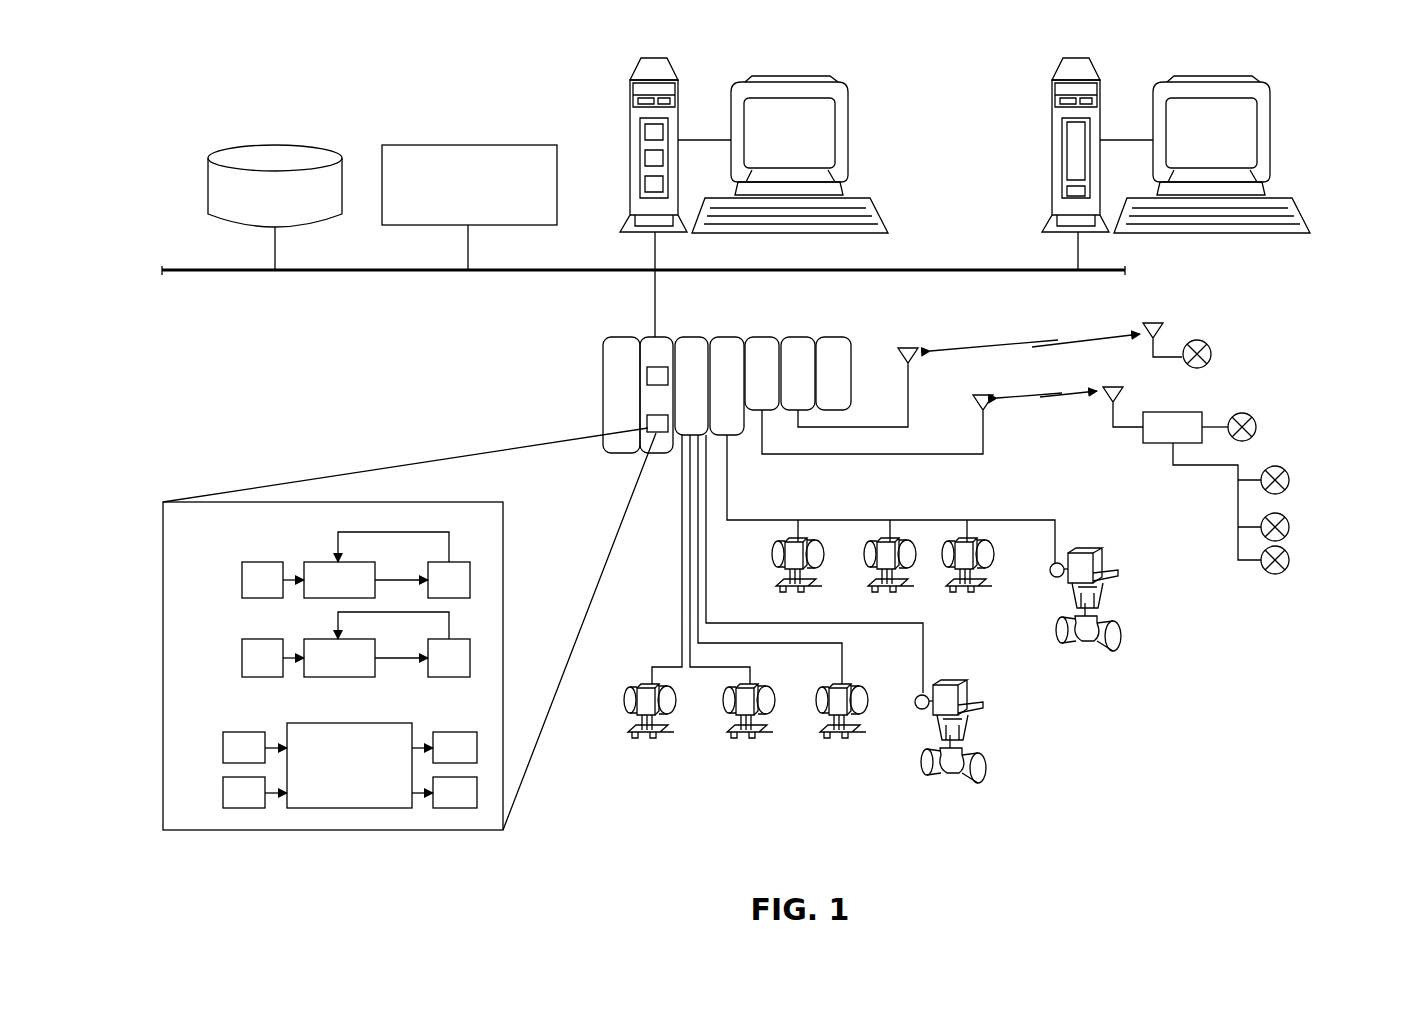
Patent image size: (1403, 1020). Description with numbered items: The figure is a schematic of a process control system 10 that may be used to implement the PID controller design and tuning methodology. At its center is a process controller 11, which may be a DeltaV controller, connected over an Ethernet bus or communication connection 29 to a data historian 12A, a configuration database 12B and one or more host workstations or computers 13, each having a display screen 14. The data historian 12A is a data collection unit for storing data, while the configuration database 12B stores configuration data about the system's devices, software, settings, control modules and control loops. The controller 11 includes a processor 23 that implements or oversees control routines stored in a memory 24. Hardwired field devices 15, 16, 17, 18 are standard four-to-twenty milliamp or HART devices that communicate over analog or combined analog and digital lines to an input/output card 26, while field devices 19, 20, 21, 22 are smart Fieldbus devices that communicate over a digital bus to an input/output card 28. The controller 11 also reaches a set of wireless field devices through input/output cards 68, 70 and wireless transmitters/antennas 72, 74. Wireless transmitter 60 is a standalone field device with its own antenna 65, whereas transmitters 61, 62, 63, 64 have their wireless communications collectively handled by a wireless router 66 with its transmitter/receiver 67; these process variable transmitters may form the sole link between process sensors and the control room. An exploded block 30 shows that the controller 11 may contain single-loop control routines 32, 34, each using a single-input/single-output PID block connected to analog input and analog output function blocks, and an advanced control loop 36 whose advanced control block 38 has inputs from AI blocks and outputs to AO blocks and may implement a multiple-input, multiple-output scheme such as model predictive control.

The process control system 10 is at (959, 60).
The process controller 11 is at (648, 343).
The data historian 12A is at (305, 142).
The configuration database 12B is at (501, 144).
The host workstation 13 is at (630, 98).
The display screen 14 is at (848, 123).
The field device 15 is at (643, 730).
The field device 16 is at (743, 730).
The field device 17 is at (836, 730).
The field device 18 is at (943, 717).
The field device 19 is at (805, 540).
The field device 20 is at (890, 540).
The field device 21 is at (967, 540).
The field device 22 is at (1078, 552).
The processor 23 is at (647, 375).
The memory 24 is at (648, 425).
The input/output card 26 is at (693, 350).
The input/output card 28 is at (722, 347).
The communication connection 29 is at (643, 294).
The exploded block 30 is at (409, 629).
The single-loop control routine 32 is at (238, 551).
The single-loop control routine 34 is at (238, 629).
The advanced control loop 36 is at (331, 742).
The advanced control block 38 is at (402, 723).
The wireless field device 60 is at (1212, 353).
The wireless field device 61 is at (1256, 427).
The wireless field device 62 is at (1290, 480).
The wireless field device 63 is at (1290, 525).
The wireless field device 64 is at (1290, 562).
The antenna 65 is at (1163, 332).
The wireless router 66 is at (1152, 445).
The transmitter/receiver 67 is at (1115, 408).
The input/output card 68 is at (763, 347).
The input/output card 70 is at (800, 347).
The wireless transmitter/antenna 72 is at (982, 430).
The wireless transmitter/antenna 74 is at (910, 385).